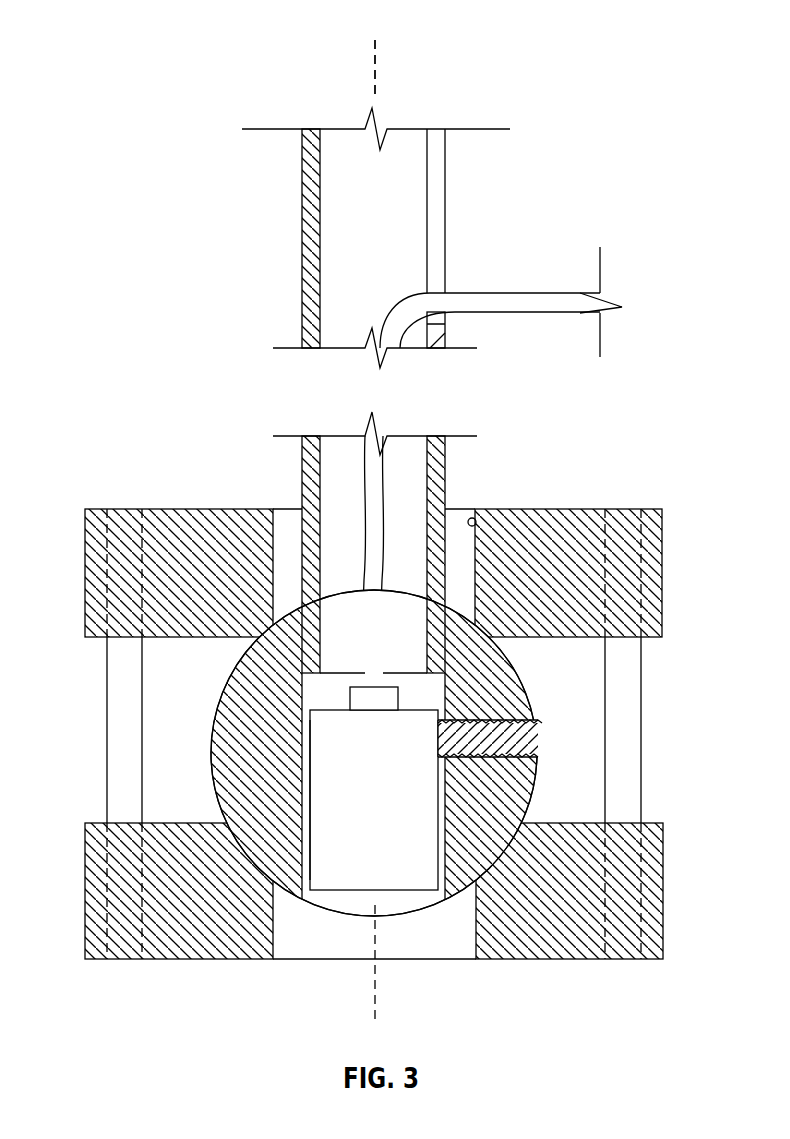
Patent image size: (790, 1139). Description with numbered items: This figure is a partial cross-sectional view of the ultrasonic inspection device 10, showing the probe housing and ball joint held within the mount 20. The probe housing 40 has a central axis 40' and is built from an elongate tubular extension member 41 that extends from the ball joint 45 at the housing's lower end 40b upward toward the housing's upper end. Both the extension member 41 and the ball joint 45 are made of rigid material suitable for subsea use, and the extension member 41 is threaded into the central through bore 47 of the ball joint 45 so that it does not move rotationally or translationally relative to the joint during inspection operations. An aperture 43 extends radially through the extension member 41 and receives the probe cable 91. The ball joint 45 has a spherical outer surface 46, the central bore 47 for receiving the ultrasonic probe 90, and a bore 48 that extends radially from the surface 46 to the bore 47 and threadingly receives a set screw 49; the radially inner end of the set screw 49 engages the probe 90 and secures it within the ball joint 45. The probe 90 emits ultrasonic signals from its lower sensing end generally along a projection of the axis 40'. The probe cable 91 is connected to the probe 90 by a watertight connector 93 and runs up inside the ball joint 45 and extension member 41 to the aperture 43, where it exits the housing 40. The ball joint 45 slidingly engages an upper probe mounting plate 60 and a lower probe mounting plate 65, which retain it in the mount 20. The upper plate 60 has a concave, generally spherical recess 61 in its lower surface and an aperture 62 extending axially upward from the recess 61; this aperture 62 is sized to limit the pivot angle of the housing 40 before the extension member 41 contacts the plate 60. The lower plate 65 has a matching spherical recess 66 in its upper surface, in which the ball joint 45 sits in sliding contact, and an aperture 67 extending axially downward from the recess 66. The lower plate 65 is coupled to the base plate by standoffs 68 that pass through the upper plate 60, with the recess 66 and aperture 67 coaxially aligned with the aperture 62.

The ultrasonic inspection device 10 is at (117, 56).
The central axis 40' is at (412, 70).
The probe housing 40 is at (319, 237).
The extension member 41 is at (311, 238).
The aperture 43 is at (452, 286).
The probe cable 91 is at (535, 293).
The mount 20 is at (437, 472).
The upper probe mounting plate 60 is at (588, 512).
The aperture 62 is at (476, 522).
The recess 61 is at (497, 627).
The ball joint 45 is at (513, 699).
The spherical outer surface 46 is at (535, 786).
The central through bore 47 is at (303, 855).
The bore 48 is at (460, 740).
The set screw 49 is at (522, 737).
The ultrasonic probe 90 is at (392, 813).
The watertight connector 93 is at (383, 700).
The recess 66 is at (430, 907).
The lower probe mounting plate 65 is at (652, 877).
The aperture 67 is at (272, 957).
The standoffs 68 is at (110, 699).
The lower end 40b is at (455, 893).